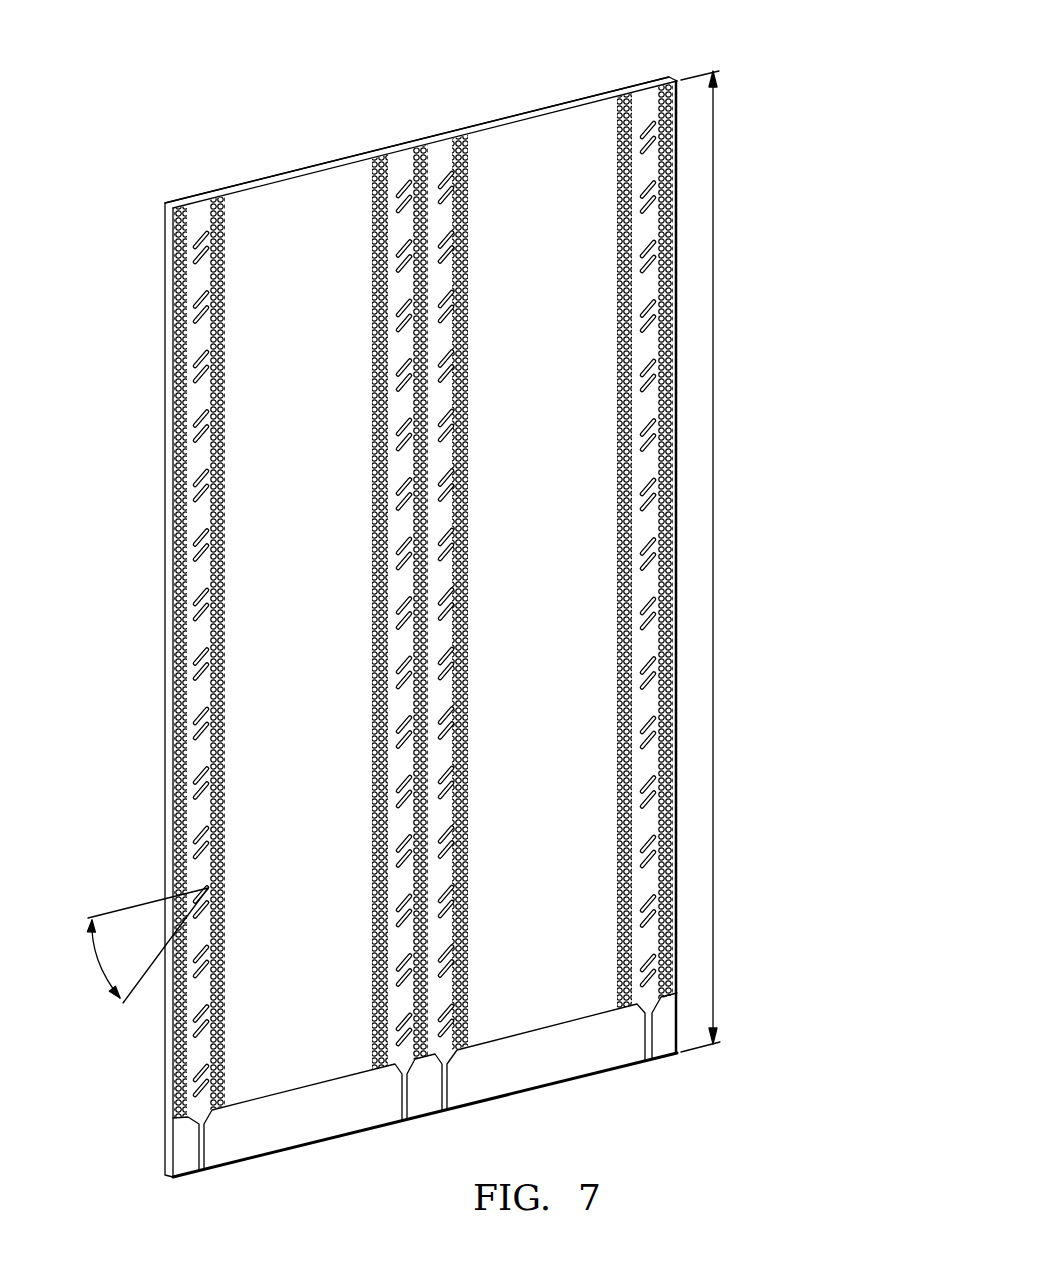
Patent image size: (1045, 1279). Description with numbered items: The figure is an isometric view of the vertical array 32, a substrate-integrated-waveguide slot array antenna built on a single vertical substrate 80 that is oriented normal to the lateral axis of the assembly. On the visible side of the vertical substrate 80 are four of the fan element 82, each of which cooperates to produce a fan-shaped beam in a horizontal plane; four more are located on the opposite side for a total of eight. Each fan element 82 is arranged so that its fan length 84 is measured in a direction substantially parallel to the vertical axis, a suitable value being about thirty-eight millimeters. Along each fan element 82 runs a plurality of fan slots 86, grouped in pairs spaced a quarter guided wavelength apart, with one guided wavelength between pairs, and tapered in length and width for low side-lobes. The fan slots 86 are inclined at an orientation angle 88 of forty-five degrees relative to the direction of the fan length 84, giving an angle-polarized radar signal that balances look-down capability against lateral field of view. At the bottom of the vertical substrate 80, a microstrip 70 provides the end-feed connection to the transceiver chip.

The vertical array 32 is at (428, 596).
The fan element 82 is at (210, 157).
The vertical substrate 80 is at (489, 121).
The fan length 84 is at (718, 478).
The fan slots 86 is at (198, 477).
The orientation angle 88 is at (98, 963).
The microstrip 70 is at (200, 1148).